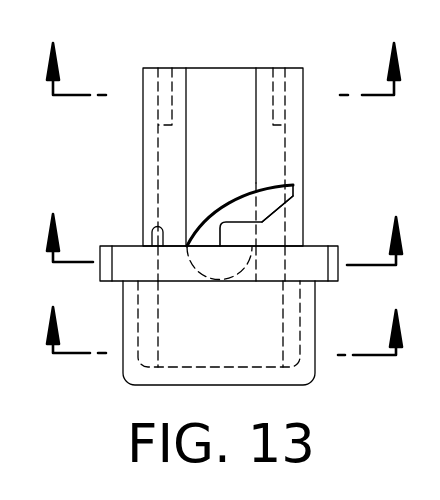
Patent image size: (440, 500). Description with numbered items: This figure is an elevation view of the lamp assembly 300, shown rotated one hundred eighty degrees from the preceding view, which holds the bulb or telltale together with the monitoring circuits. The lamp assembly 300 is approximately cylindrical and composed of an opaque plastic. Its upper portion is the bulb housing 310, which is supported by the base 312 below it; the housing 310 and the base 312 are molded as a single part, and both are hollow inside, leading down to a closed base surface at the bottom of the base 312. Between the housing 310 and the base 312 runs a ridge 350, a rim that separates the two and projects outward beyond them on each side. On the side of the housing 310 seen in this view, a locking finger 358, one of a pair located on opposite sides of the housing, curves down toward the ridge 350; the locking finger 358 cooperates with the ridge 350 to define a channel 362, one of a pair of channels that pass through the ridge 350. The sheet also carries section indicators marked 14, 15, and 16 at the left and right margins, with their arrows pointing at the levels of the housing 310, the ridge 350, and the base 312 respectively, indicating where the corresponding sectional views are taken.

The section line 14- 14 is at (225, 310).
The section line 15- 15 is at (225, 218).
The section line 16- 16 is at (224, 47).
The lamp assembly 300 is at (136, 181).
The bulb housing 310 is at (304, 90).
The base 312 is at (318, 365).
The ridge 350 is at (334, 283).
The locking finger 358 is at (235, 207).
The channel 362 is at (262, 232).